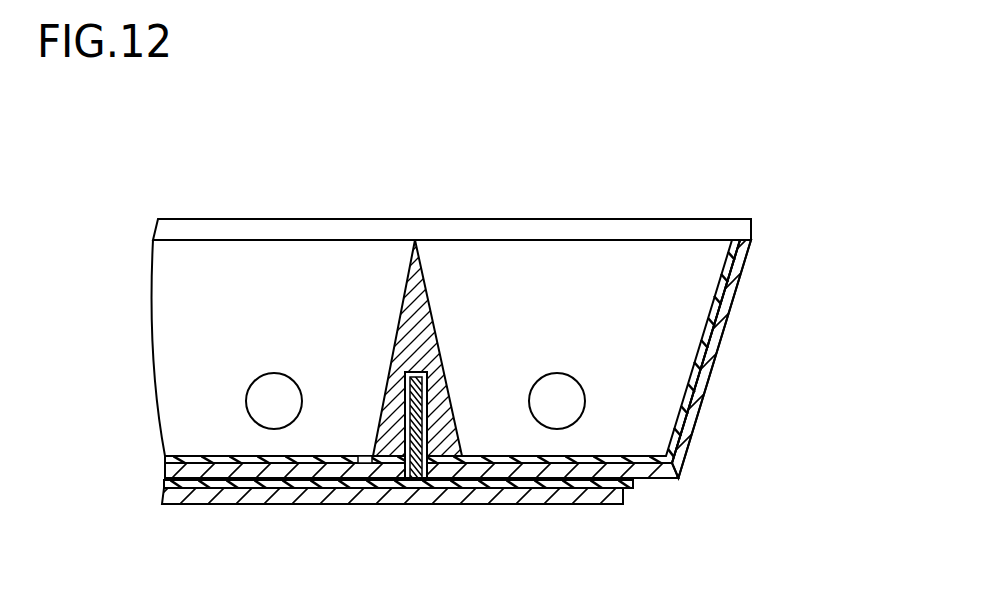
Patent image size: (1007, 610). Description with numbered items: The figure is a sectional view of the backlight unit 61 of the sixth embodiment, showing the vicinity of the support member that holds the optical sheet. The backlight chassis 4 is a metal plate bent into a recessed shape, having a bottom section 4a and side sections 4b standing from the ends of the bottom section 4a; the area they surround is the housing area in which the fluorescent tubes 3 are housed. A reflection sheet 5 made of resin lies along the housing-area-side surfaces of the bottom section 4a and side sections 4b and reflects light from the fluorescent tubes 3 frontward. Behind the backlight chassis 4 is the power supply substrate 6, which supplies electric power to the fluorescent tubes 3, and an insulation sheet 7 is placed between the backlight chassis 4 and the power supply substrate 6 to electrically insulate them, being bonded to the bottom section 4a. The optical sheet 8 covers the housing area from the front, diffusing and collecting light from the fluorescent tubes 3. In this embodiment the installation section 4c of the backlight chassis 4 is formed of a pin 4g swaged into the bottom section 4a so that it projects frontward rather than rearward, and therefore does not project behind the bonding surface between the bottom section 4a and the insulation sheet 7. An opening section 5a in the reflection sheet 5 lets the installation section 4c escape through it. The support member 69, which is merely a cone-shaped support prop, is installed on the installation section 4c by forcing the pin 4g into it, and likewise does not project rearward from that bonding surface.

The backlight unit 61 is at (716, 189).
The optical sheet 8 is at (743, 230).
The fluorescent tubes 3 is at (266, 372).
The support member 69 is at (407, 290).
The reflection sheet 5 is at (718, 313).
The opening section 5a is at (370, 463).
The backlight chassis 4 is at (707, 368).
The bottom section 4a is at (652, 470).
The side sections 4b is at (692, 414).
The installation section 4c is at (426, 468).
The pin 4g is at (413, 470).
The power supply substrate 6 is at (538, 497).
The insulation sheet 7 is at (587, 487).